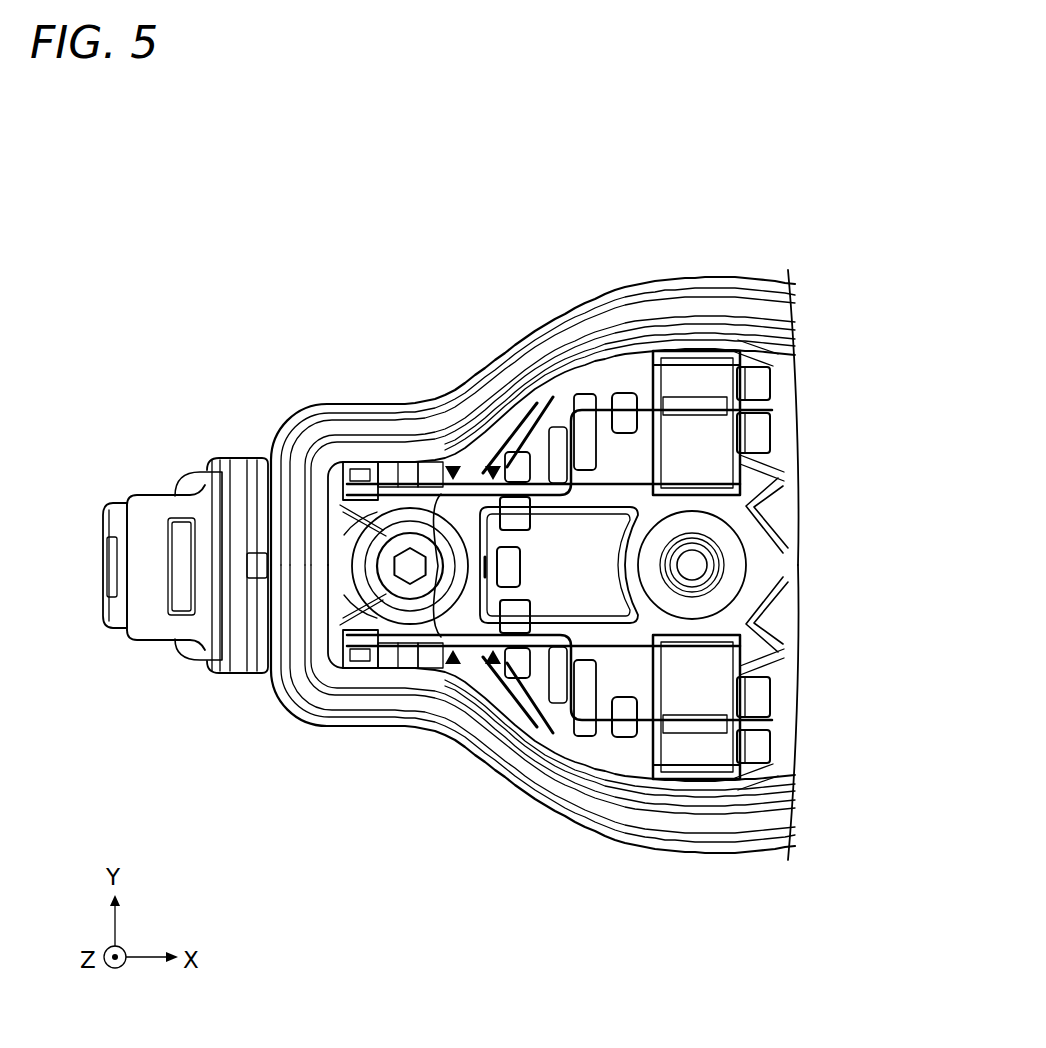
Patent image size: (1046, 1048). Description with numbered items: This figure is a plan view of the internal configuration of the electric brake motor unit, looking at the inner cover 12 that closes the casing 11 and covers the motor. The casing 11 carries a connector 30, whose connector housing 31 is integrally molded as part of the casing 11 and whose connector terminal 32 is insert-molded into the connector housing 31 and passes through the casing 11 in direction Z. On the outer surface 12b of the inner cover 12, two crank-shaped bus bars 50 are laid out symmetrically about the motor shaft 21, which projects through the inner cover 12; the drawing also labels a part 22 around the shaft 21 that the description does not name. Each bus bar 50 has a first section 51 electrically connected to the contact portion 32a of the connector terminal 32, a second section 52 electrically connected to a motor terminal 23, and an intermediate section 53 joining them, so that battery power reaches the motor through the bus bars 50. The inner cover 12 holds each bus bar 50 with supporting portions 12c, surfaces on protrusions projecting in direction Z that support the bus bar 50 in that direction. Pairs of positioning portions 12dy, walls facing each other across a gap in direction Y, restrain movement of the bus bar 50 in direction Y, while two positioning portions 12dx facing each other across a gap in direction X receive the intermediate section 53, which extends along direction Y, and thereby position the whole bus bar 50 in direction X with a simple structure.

The casing 11 is at (312, 688).
The inner cover 12 is at (772, 539).
The outer surface 12b is at (655, 642).
The supporting portion 12c is at (585, 396).
The positioning portion 12dx is at (455, 466).
The positioning portion 12dy is at (745, 352).
The shaft 21 is at (700, 572).
The boss 22 is at (742, 556).
The motor terminal 23 is at (718, 352).
The connector 30 is at (185, 598).
The connector housing 31 is at (203, 632).
The connector terminal 32 is at (387, 572).
The contact portion 32a is at (375, 760).
The bus bar 50 is at (452, 462).
The first section 51 is at (440, 505).
The second section 52 is at (688, 358).
The intermediate section 53 is at (571, 412).